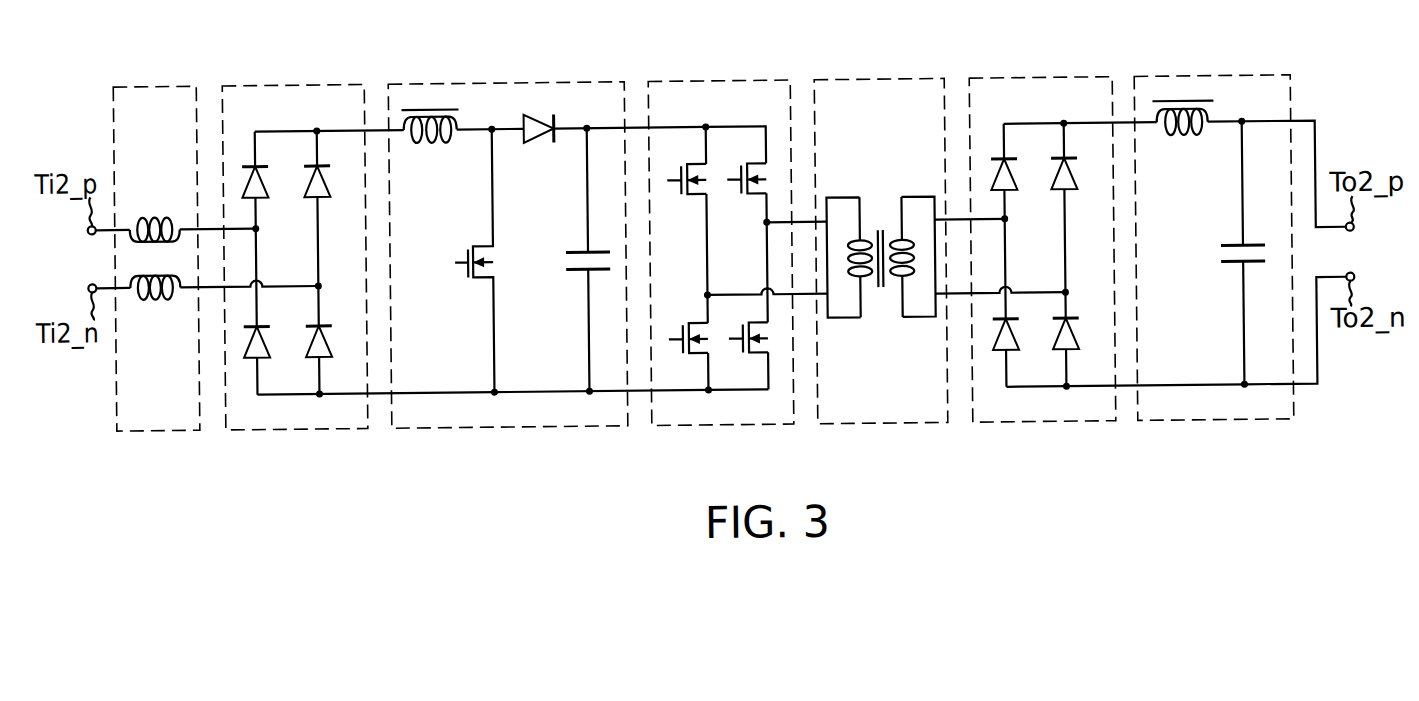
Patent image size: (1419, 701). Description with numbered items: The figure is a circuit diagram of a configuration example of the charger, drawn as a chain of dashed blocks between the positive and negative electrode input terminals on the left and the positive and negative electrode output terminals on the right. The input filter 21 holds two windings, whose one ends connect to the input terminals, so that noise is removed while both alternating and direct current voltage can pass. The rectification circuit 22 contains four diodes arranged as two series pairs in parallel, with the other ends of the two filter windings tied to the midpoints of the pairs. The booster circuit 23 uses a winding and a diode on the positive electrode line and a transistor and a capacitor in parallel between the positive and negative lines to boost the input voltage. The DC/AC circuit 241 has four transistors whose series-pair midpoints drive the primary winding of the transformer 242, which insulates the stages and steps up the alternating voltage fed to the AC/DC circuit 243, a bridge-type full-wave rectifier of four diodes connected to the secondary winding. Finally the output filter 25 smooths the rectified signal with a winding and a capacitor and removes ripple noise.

The input filter 21 is at (182, 81).
The rectification circuit 22 is at (339, 81).
The booster circuit 23 is at (593, 81).
The DC/AC circuit 241 is at (781, 60).
The transformer 242 is at (918, 81).
The AC/DC circuit 243 is at (1088, 81).
The output filter 25 is at (1267, 81).